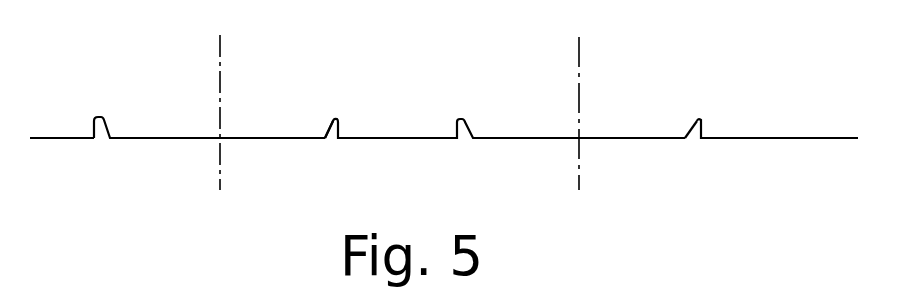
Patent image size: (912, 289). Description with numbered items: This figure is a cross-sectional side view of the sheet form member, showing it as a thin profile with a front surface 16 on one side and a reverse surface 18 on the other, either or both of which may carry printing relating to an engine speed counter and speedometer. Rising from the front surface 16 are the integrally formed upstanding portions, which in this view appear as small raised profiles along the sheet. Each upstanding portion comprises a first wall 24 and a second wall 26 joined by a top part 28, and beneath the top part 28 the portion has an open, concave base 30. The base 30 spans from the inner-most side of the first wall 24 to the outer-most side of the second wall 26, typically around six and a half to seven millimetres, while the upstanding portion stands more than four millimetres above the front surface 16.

The front surface 16 is at (807, 138).
The reverse surface 18 is at (68, 138).
The first wall 24 is at (330, 122).
The second wall 26 is at (95, 132).
The top part 28 is at (695, 119).
The base 30 is at (332, 135).